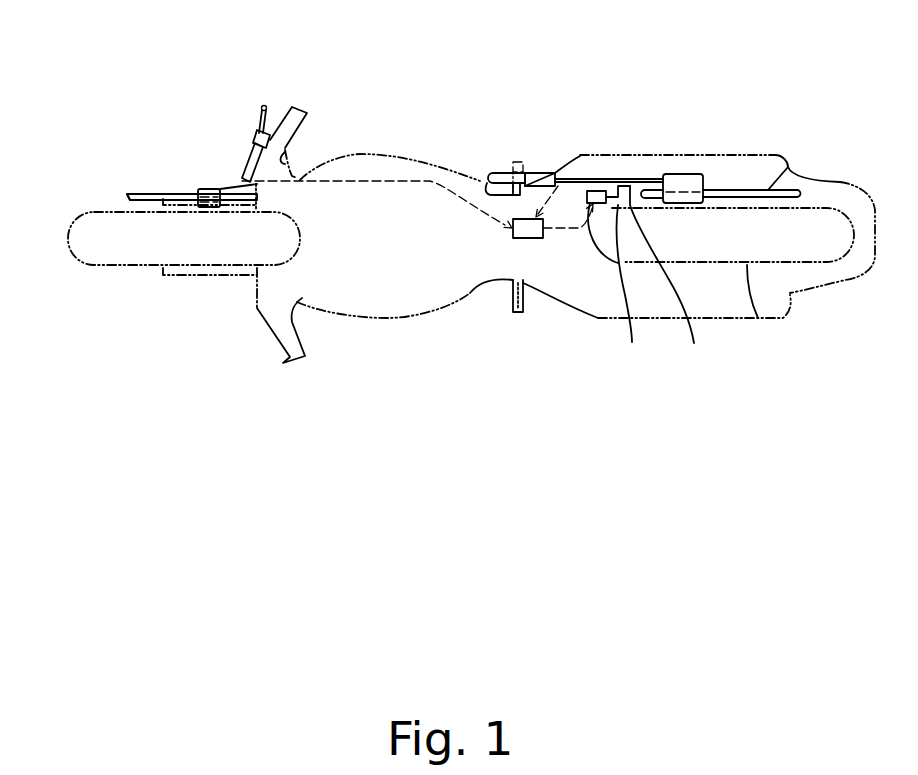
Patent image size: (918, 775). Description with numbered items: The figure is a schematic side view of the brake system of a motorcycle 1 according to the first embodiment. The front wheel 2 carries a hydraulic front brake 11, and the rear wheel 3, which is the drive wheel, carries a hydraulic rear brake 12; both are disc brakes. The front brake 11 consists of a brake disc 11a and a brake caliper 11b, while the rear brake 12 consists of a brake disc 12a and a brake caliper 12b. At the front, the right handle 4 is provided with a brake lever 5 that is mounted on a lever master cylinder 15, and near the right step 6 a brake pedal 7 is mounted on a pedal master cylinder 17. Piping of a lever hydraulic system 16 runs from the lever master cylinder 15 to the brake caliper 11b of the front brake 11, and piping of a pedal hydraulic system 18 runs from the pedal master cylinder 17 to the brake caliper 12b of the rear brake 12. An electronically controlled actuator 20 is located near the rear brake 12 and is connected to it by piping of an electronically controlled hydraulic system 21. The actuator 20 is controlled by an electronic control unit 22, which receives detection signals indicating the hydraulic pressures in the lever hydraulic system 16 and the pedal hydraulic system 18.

The motorcycle 1 is at (430, 133).
The front wheel 2 is at (107, 268).
The rear wheel 3 is at (758, 320).
The right handle 4 is at (295, 143).
The brake lever 5 is at (258, 107).
The right step 6 is at (517, 160).
The brake pedal 7 is at (490, 172).
The front brake 11 is at (186, 186).
The brake disc 11a is at (137, 195).
The brake caliper 11b is at (203, 189).
The rear brake 12 is at (717, 172).
The brake disc 12a is at (784, 163).
The brake caliper 12b is at (681, 173).
The lever master cylinder 15 is at (253, 140).
The lever hydraulic system 16 is at (250, 168).
The pedal master cylinder 17 is at (537, 172).
The pedal hydraulic system 18 is at (607, 188).
The actuator 20 is at (635, 295).
The electronically controlled hydraulic system 21 is at (676, 285).
The electronic control unit 22 is at (538, 238).